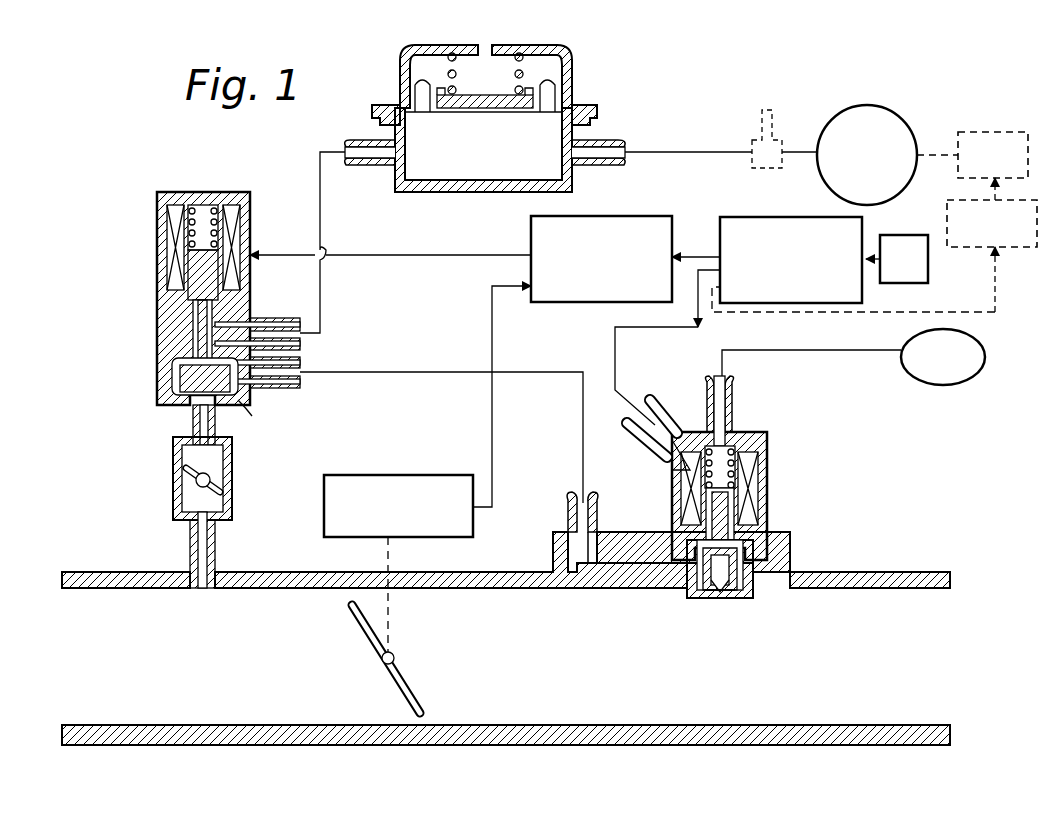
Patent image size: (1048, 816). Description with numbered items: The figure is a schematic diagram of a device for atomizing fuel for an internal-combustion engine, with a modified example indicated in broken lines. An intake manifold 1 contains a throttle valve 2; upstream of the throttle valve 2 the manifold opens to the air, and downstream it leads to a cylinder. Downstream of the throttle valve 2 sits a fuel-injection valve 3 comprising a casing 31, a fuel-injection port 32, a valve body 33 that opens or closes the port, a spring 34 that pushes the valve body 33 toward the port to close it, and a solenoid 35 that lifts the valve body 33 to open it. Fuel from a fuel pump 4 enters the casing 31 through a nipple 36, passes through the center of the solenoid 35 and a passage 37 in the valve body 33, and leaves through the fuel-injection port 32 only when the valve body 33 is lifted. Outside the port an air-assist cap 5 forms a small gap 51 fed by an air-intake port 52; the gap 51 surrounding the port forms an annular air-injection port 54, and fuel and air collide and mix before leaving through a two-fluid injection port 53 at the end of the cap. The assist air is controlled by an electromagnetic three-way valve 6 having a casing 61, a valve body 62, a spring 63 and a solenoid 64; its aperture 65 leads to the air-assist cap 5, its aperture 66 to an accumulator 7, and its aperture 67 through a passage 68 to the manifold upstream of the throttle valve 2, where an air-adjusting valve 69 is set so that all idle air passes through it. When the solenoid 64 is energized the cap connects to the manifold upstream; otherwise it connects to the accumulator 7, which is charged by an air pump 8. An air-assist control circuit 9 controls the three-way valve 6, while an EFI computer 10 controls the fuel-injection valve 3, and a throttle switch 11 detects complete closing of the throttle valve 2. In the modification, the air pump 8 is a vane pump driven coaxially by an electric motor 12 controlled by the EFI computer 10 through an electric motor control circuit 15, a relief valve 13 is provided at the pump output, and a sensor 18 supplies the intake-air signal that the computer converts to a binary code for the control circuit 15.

The intake manifold 1 is at (485, 745).
The throttle valve 2 is at (424, 692).
The fuel-injection valve 3 is at (736, 461).
The fuel pump 4 is at (985, 368).
The air-assist cap 5 is at (713, 611).
The electromagnetic three-way valve 6 is at (233, 293).
The accumulator 7 is at (487, 178).
The air pump 8 is at (903, 130).
The air-assist control circuit 9 is at (551, 302).
The EFI computer 10 is at (757, 303).
The throttle switch 11 is at (407, 475).
The electric motor 12 is at (993, 155).
The relief valve 13 is at (769, 140).
The electric motor control circuit 15 is at (992, 223).
The sensor 18 is at (897, 259).
The casing 31 is at (767, 470).
The fuel-injection port 32 is at (745, 598).
The valve body 33 is at (753, 562).
The spring 34 is at (758, 458).
The solenoid 35 is at (728, 495).
The nipple 36 is at (734, 384).
The passage 37 is at (742, 522).
The gap 51 is at (690, 578).
The air-intake port 52 is at (690, 565).
The two-fluid injection port 53 is at (726, 598).
The air-injection port 54 is at (712, 600).
The casing 61 is at (172, 378).
The valve body 62 is at (259, 419).
The spring 63 is at (212, 215).
The solenoid 64 is at (178, 205).
The aperture 65 is at (300, 385).
The aperture 66 is at (300, 344).
The aperture 67 is at (193, 425).
The passage 68 is at (215, 545).
The air-adjusting valve 69 is at (232, 480).